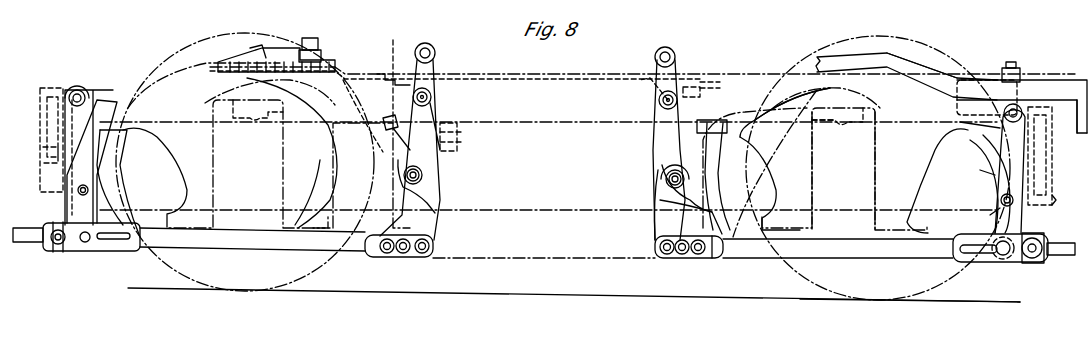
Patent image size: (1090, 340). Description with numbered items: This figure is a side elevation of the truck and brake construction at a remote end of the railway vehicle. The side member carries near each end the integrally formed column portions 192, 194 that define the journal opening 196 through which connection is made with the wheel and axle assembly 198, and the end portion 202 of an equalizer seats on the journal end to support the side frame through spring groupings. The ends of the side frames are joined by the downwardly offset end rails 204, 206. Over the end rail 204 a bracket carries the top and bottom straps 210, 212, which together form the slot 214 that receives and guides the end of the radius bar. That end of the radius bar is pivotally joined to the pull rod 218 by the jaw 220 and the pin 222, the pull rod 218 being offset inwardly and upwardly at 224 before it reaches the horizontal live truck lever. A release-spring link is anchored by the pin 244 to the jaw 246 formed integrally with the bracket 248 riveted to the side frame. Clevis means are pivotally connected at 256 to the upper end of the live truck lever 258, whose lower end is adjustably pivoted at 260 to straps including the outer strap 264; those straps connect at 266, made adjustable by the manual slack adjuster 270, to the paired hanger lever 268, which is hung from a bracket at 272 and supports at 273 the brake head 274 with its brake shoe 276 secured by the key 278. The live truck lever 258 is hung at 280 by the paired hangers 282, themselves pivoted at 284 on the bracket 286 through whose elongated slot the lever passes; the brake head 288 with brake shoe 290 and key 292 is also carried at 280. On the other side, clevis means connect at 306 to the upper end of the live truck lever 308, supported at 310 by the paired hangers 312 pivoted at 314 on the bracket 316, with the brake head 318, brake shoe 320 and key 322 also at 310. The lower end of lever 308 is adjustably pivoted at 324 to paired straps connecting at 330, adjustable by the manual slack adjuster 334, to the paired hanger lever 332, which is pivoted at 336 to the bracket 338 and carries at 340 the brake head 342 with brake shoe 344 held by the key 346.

The column portion 192 is at (814, 164).
The column portion 194 is at (875, 208).
The journal opening 196 is at (880, 110).
The wheel and axle assembly 198 is at (890, 292).
The end portion of equalizer 202 is at (848, 120).
The end rail 204 is at (1050, 205).
The end rail 206 is at (40, 154).
The top strap 210 is at (1033, 80).
The bottom strap 212 is at (1050, 97).
The slot 214 is at (1028, 68).
The pull rod 218 is at (826, 57).
The jaw 220 is at (995, 80).
The pin 222 is at (1013, 100).
The offset of pull rod 224 is at (926, 68).
The pin 244 is at (311, 38).
The jaw 246 is at (260, 46).
The bracket 248 is at (252, 60).
The pivotal connection 256 is at (426, 43).
The live truck lever 258 is at (436, 68).
The pivotal and adjustable connection 260 is at (428, 251).
The outer strap 264 is at (235, 250).
The pivotal connection 266 is at (86, 244).
The paired hanger lever 268 is at (104, 98).
The manual slack adjuster 270 is at (47, 251).
The pivotal support 272 is at (81, 90).
The pivotal support 273 is at (90, 189).
The brake head 274 is at (115, 250).
The brake shoe 276 is at (128, 132).
The key 278 is at (103, 130).
The pivotal support 280 is at (423, 176).
The paired hangers 282 is at (448, 118).
The pivotal support 284 is at (432, 97).
The bracket 286 is at (392, 56).
The brake head 288 is at (403, 253).
The brake shoe 290 is at (363, 240).
The key 292 is at (385, 118).
The pivotal connection 306 is at (667, 47).
The live truck lever 308 is at (678, 68).
The pivot point 310 is at (665, 179).
The paired hangers 312 is at (656, 118).
The pivotal support 314 is at (659, 100).
The bracket 316 is at (684, 94).
The brake head 318 is at (700, 211).
The brake shoe 320 is at (700, 256).
The key 322 is at (752, 112).
The pivotal and adjustable connection 324 is at (658, 247).
The pivotal connection 330 is at (1001, 256).
The paired hanger lever 332 is at (1000, 208).
The manual slack adjuster 334 is at (1037, 262).
The pivotal connection 336 is at (990, 125).
The bracket 338 is at (1000, 113).
The pivot 340 is at (1000, 199).
The brake head 342 is at (990, 170).
The brake shoe 344 is at (975, 135).
The key 346 is at (962, 142).